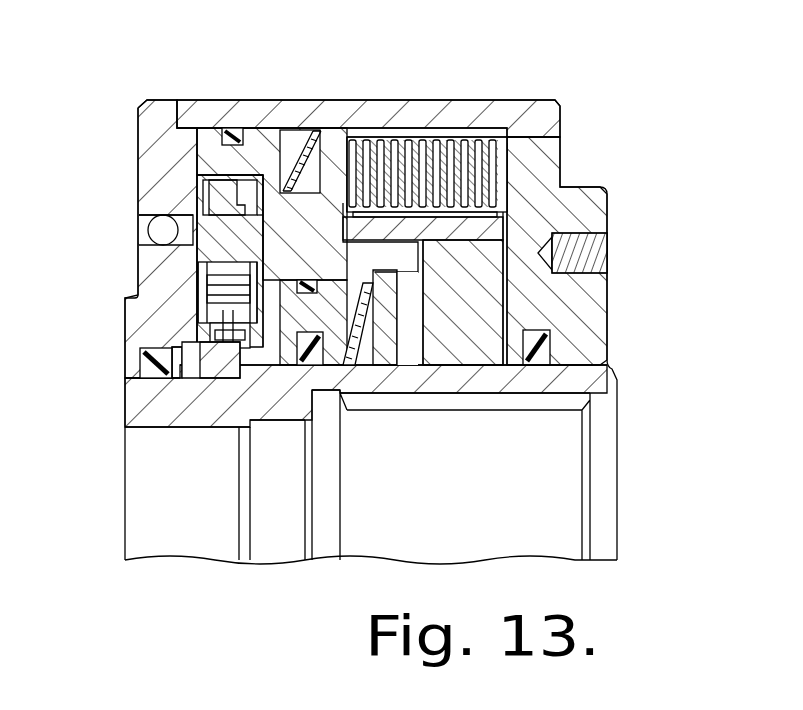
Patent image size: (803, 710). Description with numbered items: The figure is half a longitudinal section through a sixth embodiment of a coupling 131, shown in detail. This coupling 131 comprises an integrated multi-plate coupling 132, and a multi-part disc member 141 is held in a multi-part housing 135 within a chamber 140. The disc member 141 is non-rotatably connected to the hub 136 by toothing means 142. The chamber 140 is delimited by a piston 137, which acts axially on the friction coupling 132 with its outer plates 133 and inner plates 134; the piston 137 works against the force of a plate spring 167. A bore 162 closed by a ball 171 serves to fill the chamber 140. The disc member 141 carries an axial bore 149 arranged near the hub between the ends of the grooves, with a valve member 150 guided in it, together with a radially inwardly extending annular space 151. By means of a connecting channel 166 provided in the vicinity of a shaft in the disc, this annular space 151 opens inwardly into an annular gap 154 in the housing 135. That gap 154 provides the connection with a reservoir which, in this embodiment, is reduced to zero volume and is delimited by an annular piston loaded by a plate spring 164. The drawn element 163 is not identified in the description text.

The coupling 131 is at (603, 147).
The multi-plate coupling 132 is at (482, 90).
The outer plates 133 is at (377, 140).
The inner plates 134 is at (398, 152).
The housing 135 is at (213, 102).
The hub 136 is at (600, 377).
The piston 137 is at (265, 137).
The chamber 140 is at (195, 180).
The disc member 141 is at (247, 227).
The toothing means 142 is at (210, 372).
The axial bore 149 is at (222, 280).
The valve member 150 is at (217, 295).
The annular space 151 is at (230, 332).
The annular gap 154 is at (247, 370).
The bore 162 is at (145, 238).
The seal carrier 163 is at (333, 353).
The plate spring 164 is at (370, 340).
The connecting channel 166 is at (228, 360).
The plate spring 167 is at (303, 150).
The ball 171 is at (158, 228).